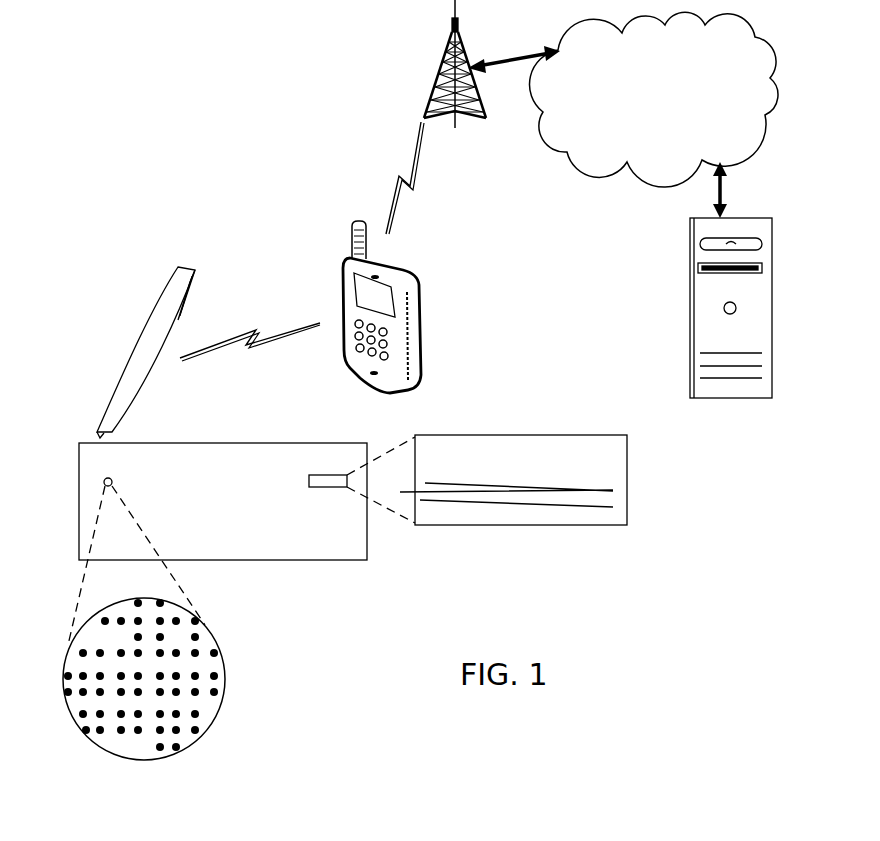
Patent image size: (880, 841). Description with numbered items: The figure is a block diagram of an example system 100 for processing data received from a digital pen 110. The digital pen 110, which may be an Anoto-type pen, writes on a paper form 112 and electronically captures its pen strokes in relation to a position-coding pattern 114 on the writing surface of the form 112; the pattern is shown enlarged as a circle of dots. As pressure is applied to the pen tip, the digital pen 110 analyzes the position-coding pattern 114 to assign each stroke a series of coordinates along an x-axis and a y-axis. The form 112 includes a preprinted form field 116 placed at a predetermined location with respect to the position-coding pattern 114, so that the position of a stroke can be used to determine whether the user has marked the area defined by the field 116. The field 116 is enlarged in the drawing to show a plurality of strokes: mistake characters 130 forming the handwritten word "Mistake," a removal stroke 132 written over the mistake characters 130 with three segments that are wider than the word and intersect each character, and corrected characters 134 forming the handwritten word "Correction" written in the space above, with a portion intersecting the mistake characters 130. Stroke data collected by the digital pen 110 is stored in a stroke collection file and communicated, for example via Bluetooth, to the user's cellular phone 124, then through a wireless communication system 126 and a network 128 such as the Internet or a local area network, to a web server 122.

The system 100 is at (213, 77).
The digital pen 110 is at (180, 265).
The paper form 112 is at (287, 562).
The position-coding pattern 114 is at (225, 687).
The form field 116 is at (317, 475).
The web server 122 is at (690, 330).
The cellular phone 124 is at (403, 268).
The wireless communication system 126 is at (440, 68).
The network 128 is at (645, 133).
The mistake characters 130 is at (547, 523).
The removal stroke 132 is at (613, 490).
The corrected characters 134 is at (560, 443).